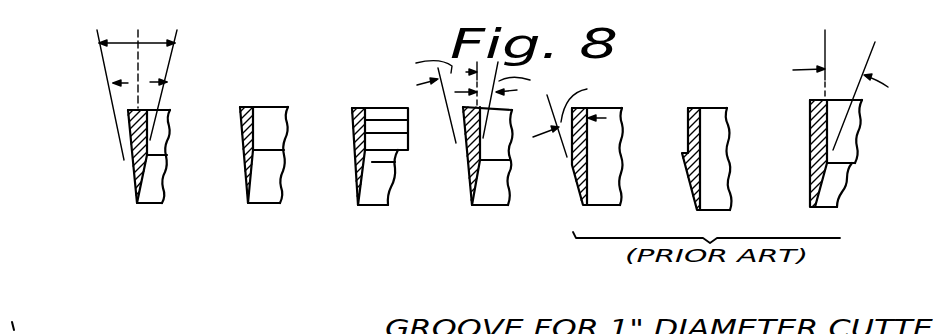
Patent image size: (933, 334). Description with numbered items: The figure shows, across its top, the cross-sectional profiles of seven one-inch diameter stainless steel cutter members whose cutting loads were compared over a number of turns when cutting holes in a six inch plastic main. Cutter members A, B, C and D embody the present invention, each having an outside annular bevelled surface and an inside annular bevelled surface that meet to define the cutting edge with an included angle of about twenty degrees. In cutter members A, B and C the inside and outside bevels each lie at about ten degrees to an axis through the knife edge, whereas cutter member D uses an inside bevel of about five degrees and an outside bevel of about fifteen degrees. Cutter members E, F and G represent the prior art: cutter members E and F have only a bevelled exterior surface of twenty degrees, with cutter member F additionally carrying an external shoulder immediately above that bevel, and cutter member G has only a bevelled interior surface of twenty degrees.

The cutter member A is at (137, 130).
The cutter member B is at (264, 170).
The cutter member C is at (380, 170).
The cutter member D is at (471, 141).
The cutter member E is at (578, 155).
The cutter member F is at (707, 170).
The cutter member G is at (840, 131).